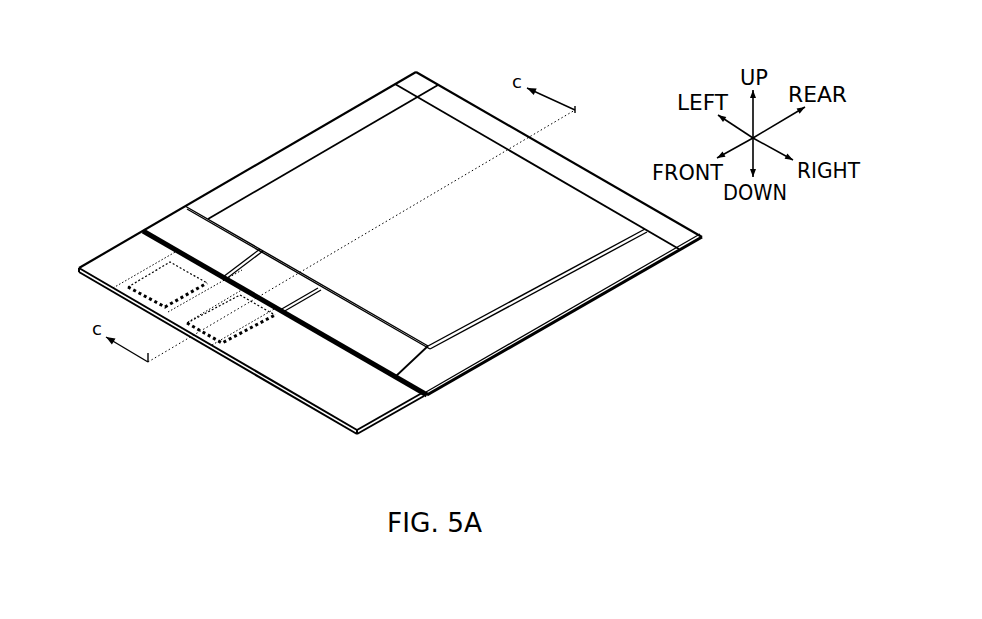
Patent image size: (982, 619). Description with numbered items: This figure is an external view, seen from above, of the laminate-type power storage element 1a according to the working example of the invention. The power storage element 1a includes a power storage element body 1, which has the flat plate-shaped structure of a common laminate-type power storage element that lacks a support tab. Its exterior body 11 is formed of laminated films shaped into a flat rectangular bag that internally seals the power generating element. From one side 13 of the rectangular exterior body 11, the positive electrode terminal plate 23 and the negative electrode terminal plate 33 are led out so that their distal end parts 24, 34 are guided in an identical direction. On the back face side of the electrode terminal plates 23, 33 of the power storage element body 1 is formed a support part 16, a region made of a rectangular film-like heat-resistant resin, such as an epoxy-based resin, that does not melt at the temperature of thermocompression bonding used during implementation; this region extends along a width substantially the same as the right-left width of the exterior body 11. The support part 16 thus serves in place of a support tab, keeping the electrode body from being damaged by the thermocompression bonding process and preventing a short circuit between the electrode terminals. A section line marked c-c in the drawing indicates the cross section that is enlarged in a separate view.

The power storage element 1a is at (600, 78).
The power storage element body 1 is at (465, 290).
The exterior body 11 is at (562, 303).
The one side 13 is at (370, 370).
The support part 16 is at (368, 402).
The positive electrode terminal plate 23 is at (162, 277).
The distal end part 24 is at (118, 288).
The negative electrode terminal plate 33 is at (230, 317).
The distal end part 34 is at (212, 348).